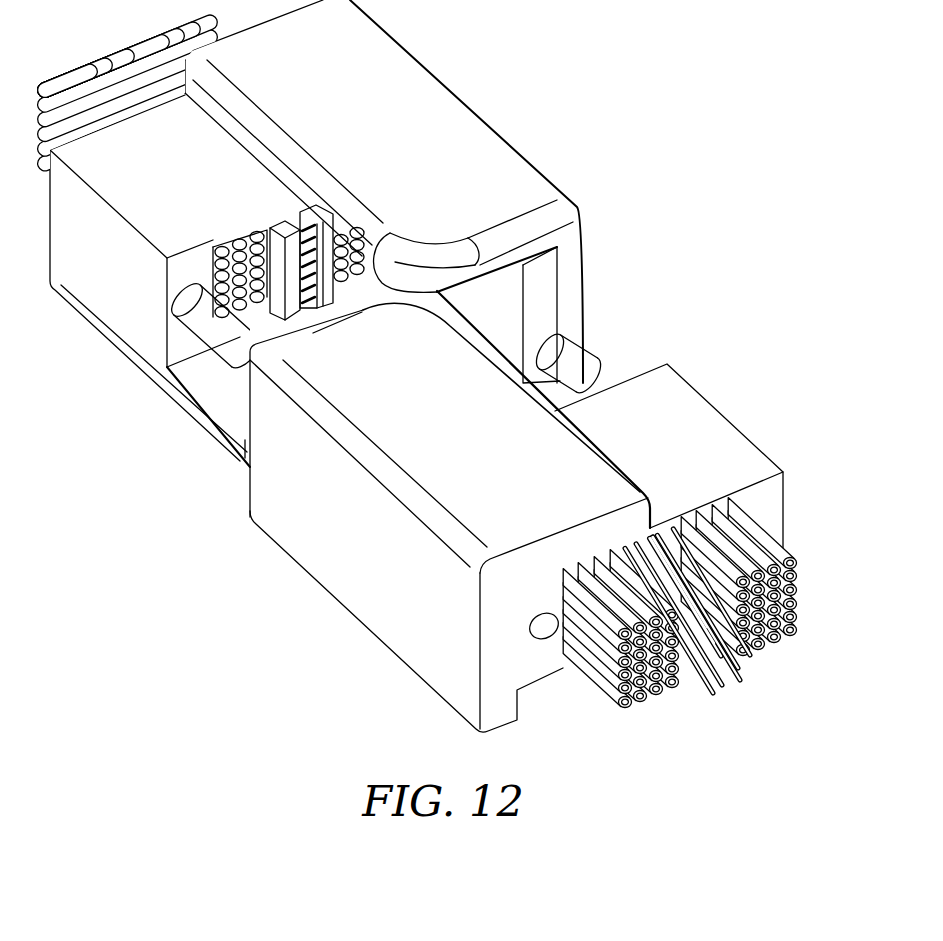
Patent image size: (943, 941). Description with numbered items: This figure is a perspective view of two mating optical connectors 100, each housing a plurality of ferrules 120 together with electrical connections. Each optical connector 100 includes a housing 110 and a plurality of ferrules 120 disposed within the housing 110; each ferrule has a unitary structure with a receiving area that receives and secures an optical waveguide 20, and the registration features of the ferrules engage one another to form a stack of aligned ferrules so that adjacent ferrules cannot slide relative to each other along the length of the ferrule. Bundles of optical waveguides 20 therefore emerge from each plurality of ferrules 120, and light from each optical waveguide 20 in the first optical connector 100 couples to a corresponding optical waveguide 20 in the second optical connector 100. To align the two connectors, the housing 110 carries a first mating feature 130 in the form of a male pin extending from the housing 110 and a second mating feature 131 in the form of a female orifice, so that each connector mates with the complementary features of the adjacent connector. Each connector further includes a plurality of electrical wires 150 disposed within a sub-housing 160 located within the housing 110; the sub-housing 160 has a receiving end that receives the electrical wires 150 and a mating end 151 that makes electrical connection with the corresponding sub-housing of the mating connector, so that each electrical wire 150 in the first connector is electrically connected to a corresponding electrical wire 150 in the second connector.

The optical waveguide 20 is at (68, 110).
The optical connector 100 is at (514, 79).
The housing 110 is at (540, 218).
The ferrule 120 is at (232, 270).
The first mating feature 130 is at (220, 330).
The second mating feature 131 is at (573, 270).
The electrical wire 150 is at (711, 597).
The mating end 151 is at (311, 232).
The sub-housing 160 is at (286, 228).